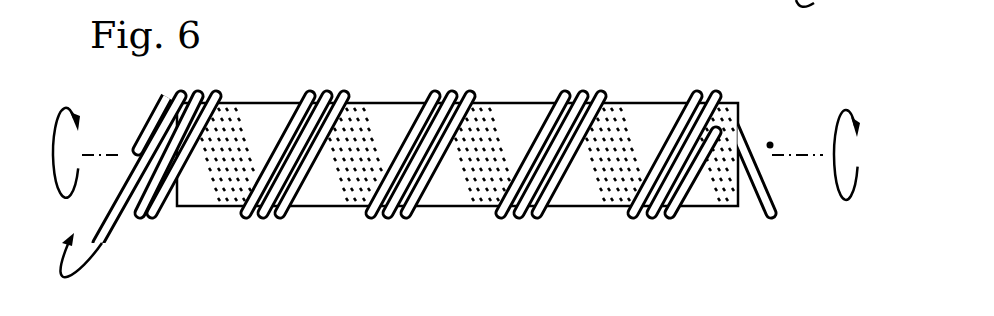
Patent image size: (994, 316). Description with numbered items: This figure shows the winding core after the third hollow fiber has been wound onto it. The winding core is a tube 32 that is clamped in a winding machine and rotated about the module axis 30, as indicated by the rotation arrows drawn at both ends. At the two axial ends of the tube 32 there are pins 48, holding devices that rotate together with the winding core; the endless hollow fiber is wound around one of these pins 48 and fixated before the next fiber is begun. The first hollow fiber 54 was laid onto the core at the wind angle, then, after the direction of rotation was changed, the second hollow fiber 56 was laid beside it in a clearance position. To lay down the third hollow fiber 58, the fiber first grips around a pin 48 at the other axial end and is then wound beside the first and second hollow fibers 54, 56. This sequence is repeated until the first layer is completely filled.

The module axis 30 is at (795, 152).
The tube 32 is at (438, 193).
The pins 48 is at (147, 216).
The first hollow fiber 54 is at (605, 97).
The second hollow fiber 56 is at (587, 97).
The third hollow fiber 58 is at (562, 96).